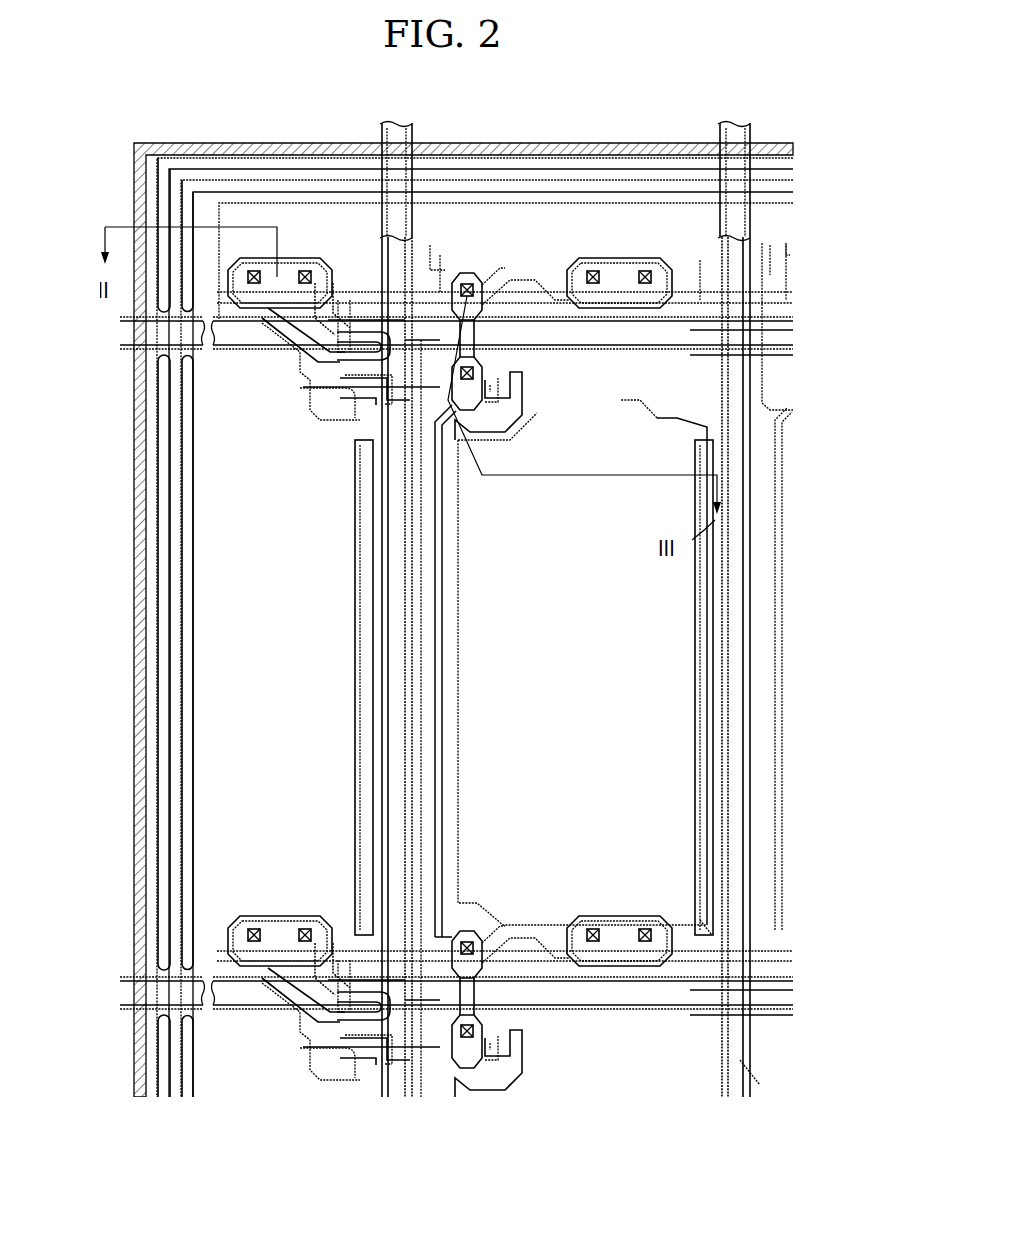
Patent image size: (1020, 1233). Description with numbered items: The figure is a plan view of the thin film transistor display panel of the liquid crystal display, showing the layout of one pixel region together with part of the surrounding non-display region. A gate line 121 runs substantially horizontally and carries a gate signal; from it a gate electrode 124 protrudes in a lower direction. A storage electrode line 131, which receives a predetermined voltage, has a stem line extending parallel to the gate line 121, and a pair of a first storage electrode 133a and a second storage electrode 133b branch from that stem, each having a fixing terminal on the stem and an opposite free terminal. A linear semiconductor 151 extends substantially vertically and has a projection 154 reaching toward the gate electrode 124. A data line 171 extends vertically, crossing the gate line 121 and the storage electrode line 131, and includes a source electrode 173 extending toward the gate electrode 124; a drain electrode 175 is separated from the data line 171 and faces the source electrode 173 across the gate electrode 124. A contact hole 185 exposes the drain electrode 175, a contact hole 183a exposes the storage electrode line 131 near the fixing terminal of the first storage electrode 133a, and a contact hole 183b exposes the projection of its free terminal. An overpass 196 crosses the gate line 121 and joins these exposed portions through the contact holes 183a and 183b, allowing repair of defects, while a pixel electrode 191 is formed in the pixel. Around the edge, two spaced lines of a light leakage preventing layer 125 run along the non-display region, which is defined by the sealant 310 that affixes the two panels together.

The sealant 310 is at (540, 143).
The light leakage preventing layer 125 is at (157, 565).
The gate line 121 is at (238, 349).
The gate electrode 124 is at (346, 290).
The storage electrode line 131 is at (445, 280).
The first storage electrode 133a is at (458, 659).
The second storage electrode 133b is at (355, 829).
The linear semiconductor 151 is at (388, 603).
The projection 154 is at (345, 392).
The data line 171 is at (381, 564).
The source electrode 173 is at (362, 402).
The drain electrode 175 is at (332, 352).
The contact hole 183a is at (472, 288).
The contact hole 183b is at (480, 372).
The contact hole 185 is at (246, 273).
The pixel electrode 191 is at (367, 520).
The overpass 196 is at (486, 402).